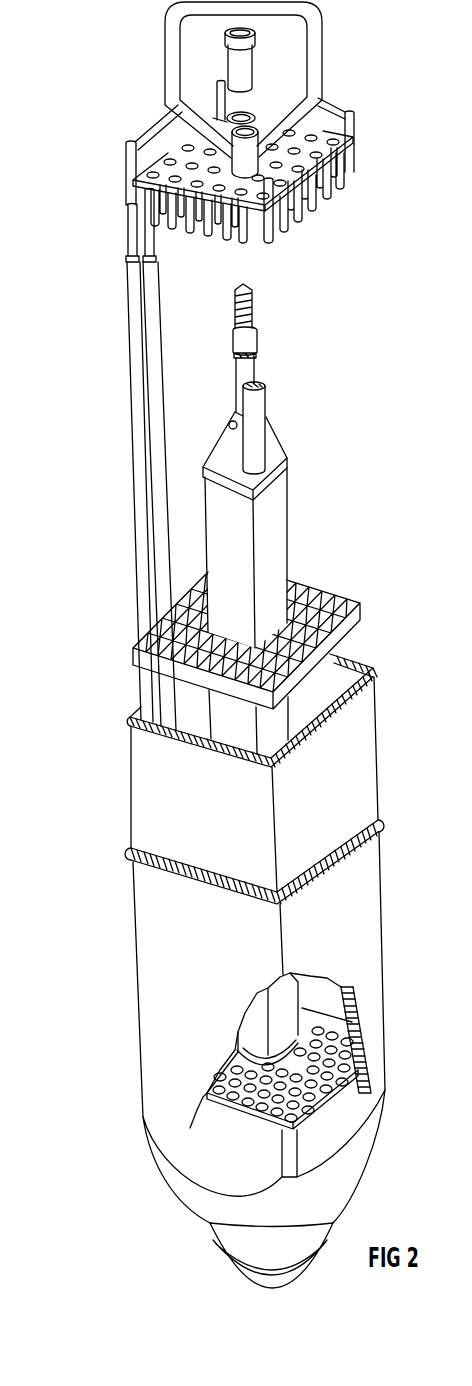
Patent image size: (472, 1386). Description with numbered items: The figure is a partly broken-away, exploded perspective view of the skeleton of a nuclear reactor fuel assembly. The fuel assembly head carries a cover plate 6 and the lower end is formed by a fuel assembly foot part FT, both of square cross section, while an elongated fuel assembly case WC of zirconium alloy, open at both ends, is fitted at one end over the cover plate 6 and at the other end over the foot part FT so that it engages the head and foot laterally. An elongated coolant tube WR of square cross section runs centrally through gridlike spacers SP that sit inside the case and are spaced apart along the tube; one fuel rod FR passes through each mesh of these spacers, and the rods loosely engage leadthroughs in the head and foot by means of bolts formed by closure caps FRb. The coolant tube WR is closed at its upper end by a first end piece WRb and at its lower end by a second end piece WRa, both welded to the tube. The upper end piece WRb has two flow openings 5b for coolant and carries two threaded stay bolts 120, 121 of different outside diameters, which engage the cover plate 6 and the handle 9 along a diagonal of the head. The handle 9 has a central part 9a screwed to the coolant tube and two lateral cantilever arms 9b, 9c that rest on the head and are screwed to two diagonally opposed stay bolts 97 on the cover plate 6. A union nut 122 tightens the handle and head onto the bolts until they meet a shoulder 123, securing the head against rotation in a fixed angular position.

The handle 9 is at (308, 44).
The central part 9a is at (252, 127).
The lateral cantilever arm 9b is at (147, 127).
The lateral cantilever arm 9c is at (336, 98).
The stay bolt 97 is at (216, 110).
The union nut 122 is at (252, 68).
The cover plate 6 is at (348, 178).
The closure cap FRb is at (128, 238).
The fuel rod FR is at (133, 328).
The shoulder 123 is at (258, 326).
The stay bolt 120 is at (246, 372).
The stay bolt 121 is at (268, 392).
The flow opening 5b is at (229, 425).
The first end piece WRb is at (275, 447).
The coolant tube WR is at (283, 517).
The spacer SP is at (358, 615).
The fuel assembly case WC is at (362, 917).
The second end piece WRa is at (248, 1035).
The fuel assembly foot part FT is at (370, 1108).